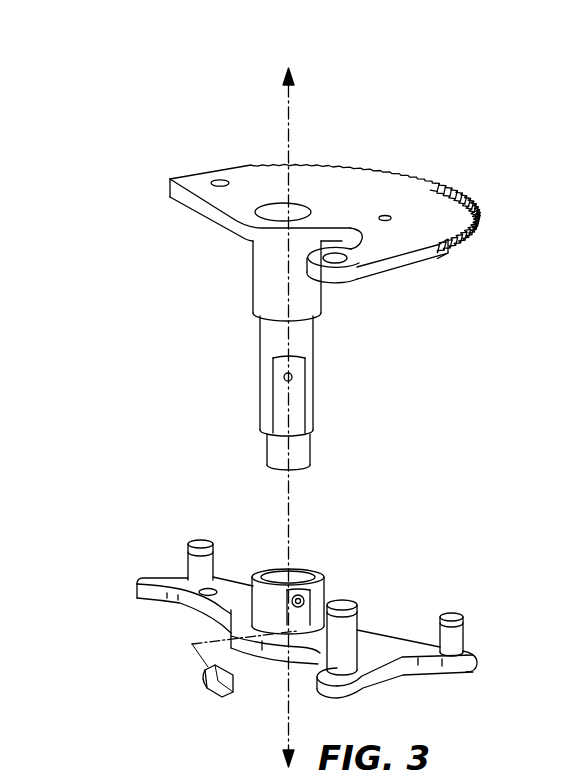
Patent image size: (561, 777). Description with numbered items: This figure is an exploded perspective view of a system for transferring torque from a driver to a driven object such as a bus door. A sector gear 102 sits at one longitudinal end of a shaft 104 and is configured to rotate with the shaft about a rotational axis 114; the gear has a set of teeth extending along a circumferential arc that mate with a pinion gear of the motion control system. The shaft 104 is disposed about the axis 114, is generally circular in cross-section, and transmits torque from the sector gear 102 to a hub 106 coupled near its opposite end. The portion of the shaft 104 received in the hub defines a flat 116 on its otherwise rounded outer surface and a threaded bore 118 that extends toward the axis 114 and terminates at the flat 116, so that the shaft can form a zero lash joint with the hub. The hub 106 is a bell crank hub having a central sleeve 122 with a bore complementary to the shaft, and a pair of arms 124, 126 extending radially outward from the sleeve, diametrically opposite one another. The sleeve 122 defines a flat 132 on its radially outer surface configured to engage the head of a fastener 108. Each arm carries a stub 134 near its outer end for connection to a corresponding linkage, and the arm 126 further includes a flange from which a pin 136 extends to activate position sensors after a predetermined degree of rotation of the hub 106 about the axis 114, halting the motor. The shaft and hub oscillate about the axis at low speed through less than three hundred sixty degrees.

The sector gear 102 is at (272, 182).
The shaft 104 is at (262, 289).
The hub 106 is at (230, 614).
The fastener 108 is at (214, 686).
The rotational axis 114 is at (287, 102).
The flat 116 is at (321, 393).
The threaded bore 118 is at (297, 378).
The central sleeve 122 is at (312, 635).
The arm 124 is at (143, 596).
The arm 126 is at (474, 658).
The flat 132 is at (298, 618).
The stub 134 is at (198, 561).
The pin 136 is at (353, 650).